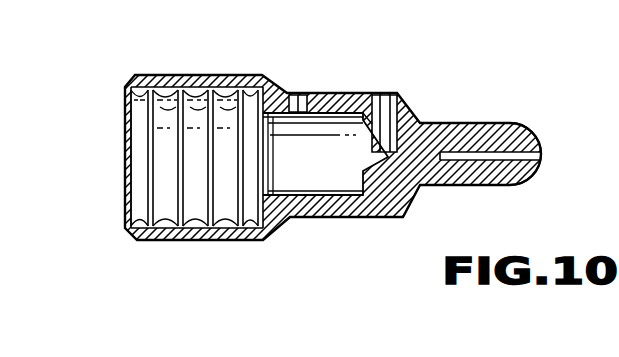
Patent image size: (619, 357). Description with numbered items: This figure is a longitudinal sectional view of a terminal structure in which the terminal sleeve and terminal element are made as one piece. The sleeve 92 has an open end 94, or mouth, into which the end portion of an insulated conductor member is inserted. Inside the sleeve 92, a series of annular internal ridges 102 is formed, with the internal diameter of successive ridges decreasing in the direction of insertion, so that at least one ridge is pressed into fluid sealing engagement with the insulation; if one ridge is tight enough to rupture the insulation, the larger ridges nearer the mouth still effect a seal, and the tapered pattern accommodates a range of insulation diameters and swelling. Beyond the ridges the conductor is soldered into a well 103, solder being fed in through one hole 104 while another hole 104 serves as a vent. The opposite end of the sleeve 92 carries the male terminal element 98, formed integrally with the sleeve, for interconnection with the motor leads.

The sleeve 92 is at (186, 242).
The open end 94 is at (160, 192).
The male terminal element 98 is at (459, 123).
The annular internal ridges 102 is at (148, 88).
The well 103 is at (321, 215).
The vent opening 104 is at (313, 95).